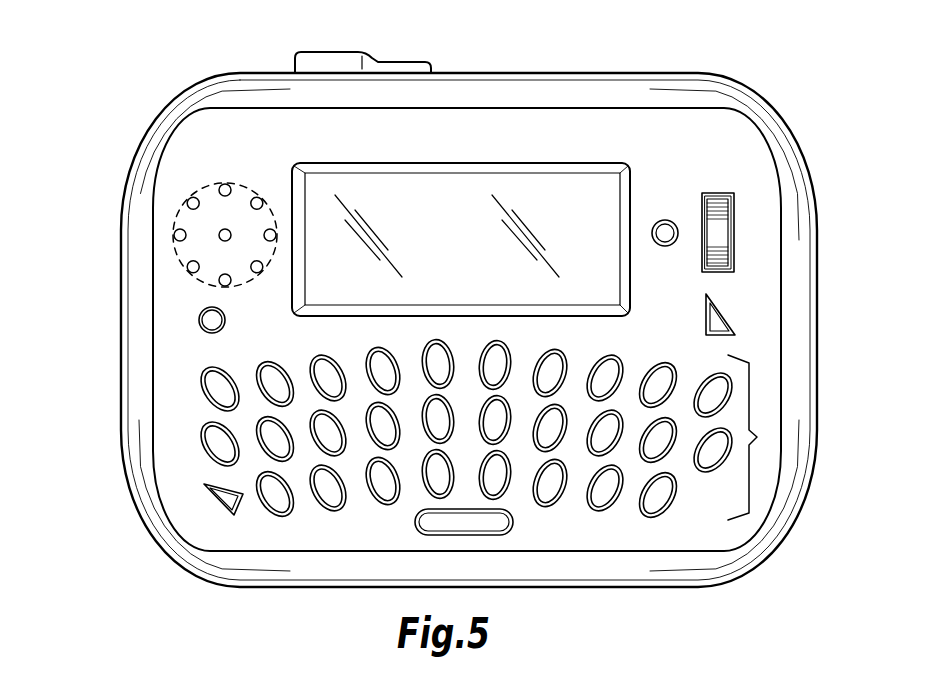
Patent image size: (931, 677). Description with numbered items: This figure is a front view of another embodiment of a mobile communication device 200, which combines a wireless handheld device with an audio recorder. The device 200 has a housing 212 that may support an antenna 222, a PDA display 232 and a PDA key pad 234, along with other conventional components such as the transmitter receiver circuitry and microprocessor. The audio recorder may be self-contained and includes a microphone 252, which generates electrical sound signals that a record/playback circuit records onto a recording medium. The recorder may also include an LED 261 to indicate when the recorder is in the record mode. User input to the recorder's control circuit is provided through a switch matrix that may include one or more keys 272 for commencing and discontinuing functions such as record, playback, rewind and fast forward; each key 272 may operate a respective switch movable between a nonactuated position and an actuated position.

The mobile communication device 200 is at (137, 97).
The housing 212 is at (530, 125).
The antenna 222 is at (549, 491).
The PDA display 232 is at (582, 200).
The PDA key pad 234 is at (757, 437).
The microphone 252 is at (175, 253).
The LED 261 is at (668, 222).
The keys 272 is at (365, 53).